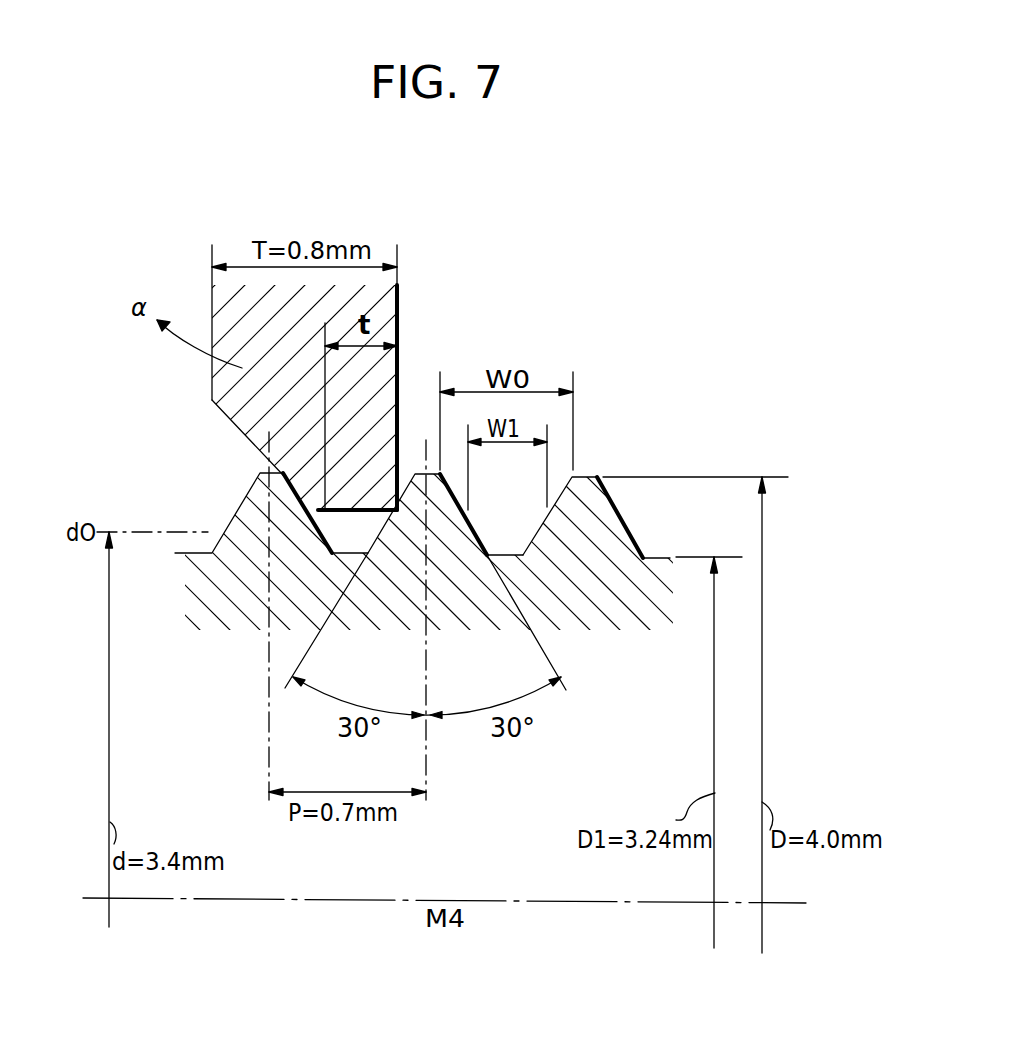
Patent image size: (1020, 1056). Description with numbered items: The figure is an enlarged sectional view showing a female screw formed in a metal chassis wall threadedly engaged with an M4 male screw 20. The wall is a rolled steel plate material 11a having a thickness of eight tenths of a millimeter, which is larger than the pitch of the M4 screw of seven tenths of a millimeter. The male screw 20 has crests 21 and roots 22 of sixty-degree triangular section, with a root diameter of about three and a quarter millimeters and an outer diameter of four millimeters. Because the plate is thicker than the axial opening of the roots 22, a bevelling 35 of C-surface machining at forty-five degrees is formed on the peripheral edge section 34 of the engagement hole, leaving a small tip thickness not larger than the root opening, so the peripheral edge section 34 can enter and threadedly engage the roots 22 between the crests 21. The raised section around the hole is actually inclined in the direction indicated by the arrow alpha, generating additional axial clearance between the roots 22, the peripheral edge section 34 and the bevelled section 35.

The plate material 11a is at (384, 312).
The male screw 20 is at (648, 592).
The crests 21 is at (587, 532).
The roots 22 is at (523, 528).
The peripheral edge section 34 is at (347, 513).
The bevelling 35 is at (213, 400).